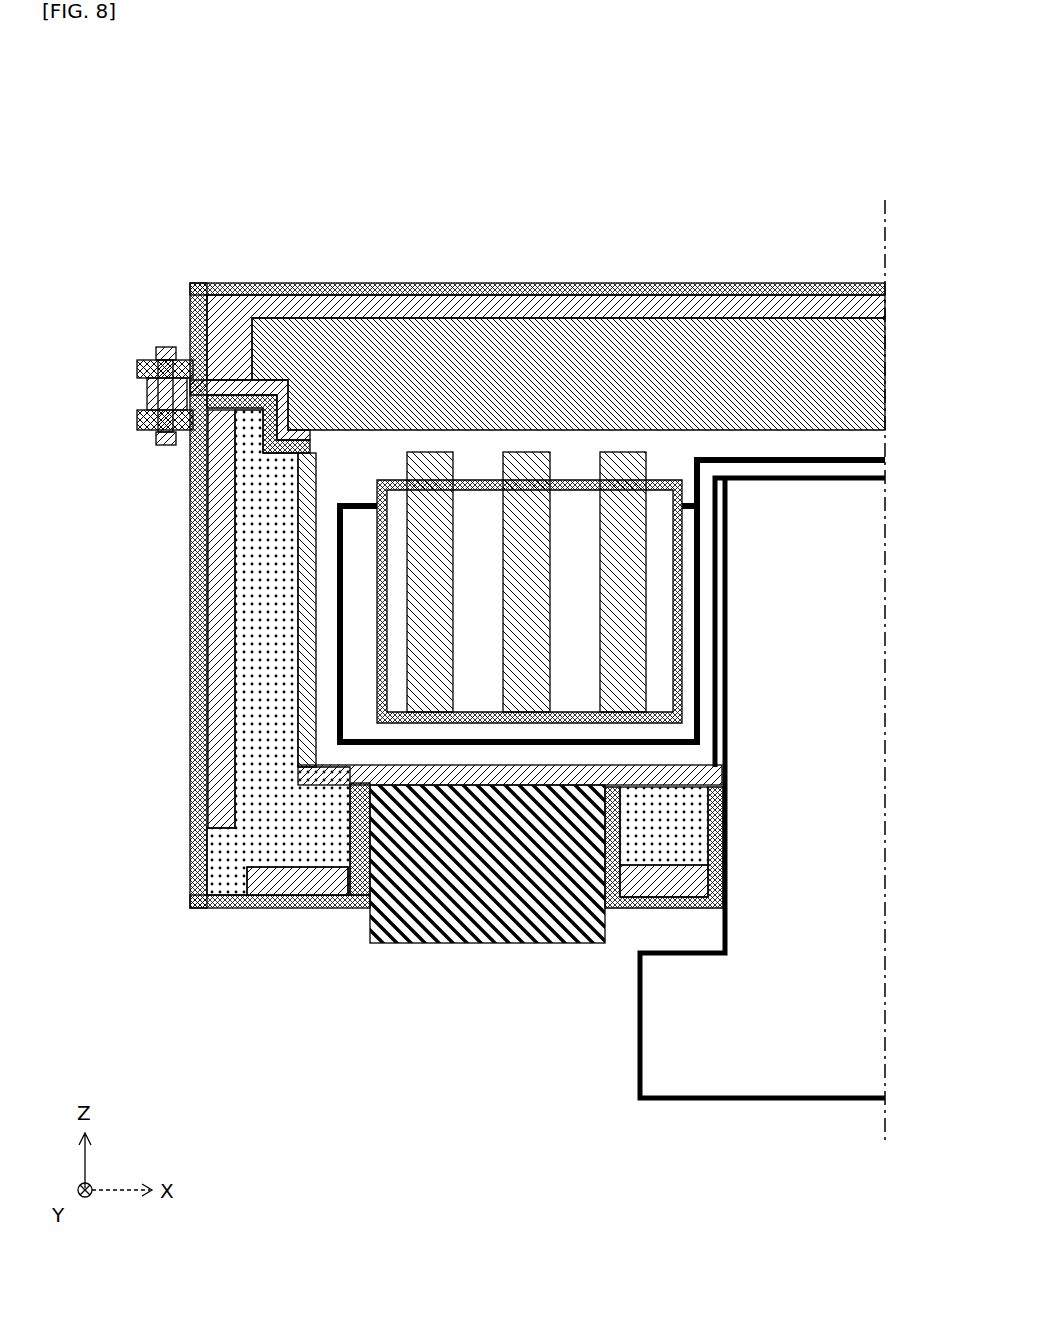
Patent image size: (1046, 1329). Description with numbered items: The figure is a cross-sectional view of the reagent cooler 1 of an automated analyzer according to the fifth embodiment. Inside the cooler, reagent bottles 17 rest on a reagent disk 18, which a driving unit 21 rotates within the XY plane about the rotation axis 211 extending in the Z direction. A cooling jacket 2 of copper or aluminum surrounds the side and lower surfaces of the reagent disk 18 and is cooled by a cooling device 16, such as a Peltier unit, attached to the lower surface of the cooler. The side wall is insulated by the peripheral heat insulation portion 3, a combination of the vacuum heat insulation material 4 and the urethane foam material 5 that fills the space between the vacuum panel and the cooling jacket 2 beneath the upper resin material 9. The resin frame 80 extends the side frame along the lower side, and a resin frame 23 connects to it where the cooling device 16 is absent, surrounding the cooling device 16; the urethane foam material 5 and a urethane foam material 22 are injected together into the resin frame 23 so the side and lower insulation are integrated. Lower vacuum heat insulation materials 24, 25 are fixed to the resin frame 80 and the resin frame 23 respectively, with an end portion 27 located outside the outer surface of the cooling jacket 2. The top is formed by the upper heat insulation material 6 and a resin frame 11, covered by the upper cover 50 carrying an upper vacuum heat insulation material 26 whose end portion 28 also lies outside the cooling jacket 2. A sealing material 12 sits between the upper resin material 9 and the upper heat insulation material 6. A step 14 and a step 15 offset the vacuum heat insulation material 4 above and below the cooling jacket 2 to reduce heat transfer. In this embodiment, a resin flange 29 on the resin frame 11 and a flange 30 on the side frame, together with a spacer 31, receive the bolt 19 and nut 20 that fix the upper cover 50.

The reagent cooler 1 is at (112, 132).
The cooling jacket 2 is at (335, 870).
The peripheral heat insulation portion 3 is at (110, 563).
The vacuum heat insulation material 4 is at (215, 598).
The urethane foam material 5 is at (253, 660).
The upper heat insulation material 6 is at (376, 340).
The upper resin material 9 is at (205, 440).
The resin frame 11 is at (318, 285).
The sealing material 12 is at (198, 380).
The step 14 is at (248, 368).
The step 15 is at (195, 843).
The cooling device 16 is at (424, 944).
The reagent bottle 17 is at (430, 452).
The reagent disk 18 is at (352, 500).
The bolt 19 is at (160, 348).
The nut 20 is at (160, 441).
The driving unit 21 is at (680, 1100).
The urethane foam material 22 is at (612, 905).
The resin frame 23 is at (664, 870).
The lower vacuum heat insulation material 24 is at (333, 906).
The lower vacuum heat insulation material 25 is at (652, 905).
The upper vacuum heat insulation material 26 is at (355, 316).
The lower vacuum heat insulation material end portion 27 is at (258, 903).
The upper vacuum heat insulation material end portion 28 is at (260, 282).
The resin flange 29 is at (138, 367).
The flange 30 is at (138, 419).
The spacer 31 is at (148, 394).
The upper cover 50 is at (548, 284).
The resin frame 80 is at (200, 730).
The rotation axis 211 is at (860, 688).